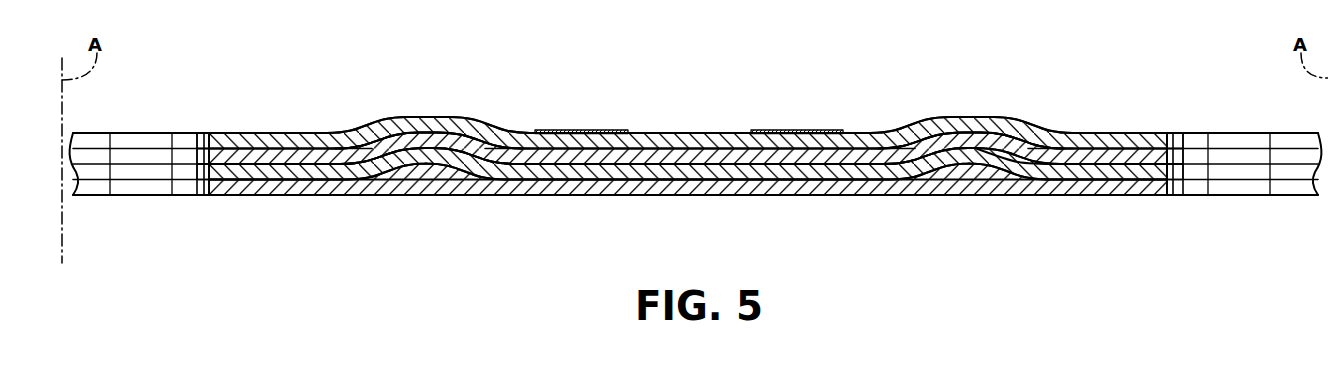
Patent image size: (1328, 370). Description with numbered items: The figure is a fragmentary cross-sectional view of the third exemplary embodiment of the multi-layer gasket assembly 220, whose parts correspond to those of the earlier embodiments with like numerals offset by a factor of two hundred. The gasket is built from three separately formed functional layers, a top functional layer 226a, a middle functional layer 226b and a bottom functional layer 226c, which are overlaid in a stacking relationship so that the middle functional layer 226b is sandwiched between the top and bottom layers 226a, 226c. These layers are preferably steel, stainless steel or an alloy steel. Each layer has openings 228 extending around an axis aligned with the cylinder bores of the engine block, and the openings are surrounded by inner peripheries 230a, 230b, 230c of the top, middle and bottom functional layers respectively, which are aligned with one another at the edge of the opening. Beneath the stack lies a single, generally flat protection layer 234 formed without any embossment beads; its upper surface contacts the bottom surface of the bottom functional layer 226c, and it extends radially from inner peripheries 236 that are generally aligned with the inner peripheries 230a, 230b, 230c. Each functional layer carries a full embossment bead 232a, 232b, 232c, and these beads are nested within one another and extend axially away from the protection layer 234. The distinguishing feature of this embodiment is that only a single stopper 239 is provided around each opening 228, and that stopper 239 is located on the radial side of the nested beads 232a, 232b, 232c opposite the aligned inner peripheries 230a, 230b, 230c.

The multi-layer gasket assembly 220 is at (880, 77).
The top functional layer 226a is at (662, 140).
The middle functional layer 226b is at (675, 155).
The bottom functional layer 226c is at (640, 173).
The openings 228 is at (136, 170).
The inner periphery of top functional layer 230a is at (207, 138).
The inner periphery of middle functional layer 230b is at (207, 157).
The inner periphery of bottom functional layer 230c is at (207, 172).
The full embossment bead of top functional layer 232a is at (417, 123).
The full embossment bead of middle functional layer 232b is at (407, 138).
The full embossment bead of bottom functional layer 232c is at (423, 157).
The protection layer 234 is at (527, 188).
The inner peripheries of protection layer 236 is at (197, 194).
The stopper 239 is at (578, 131).